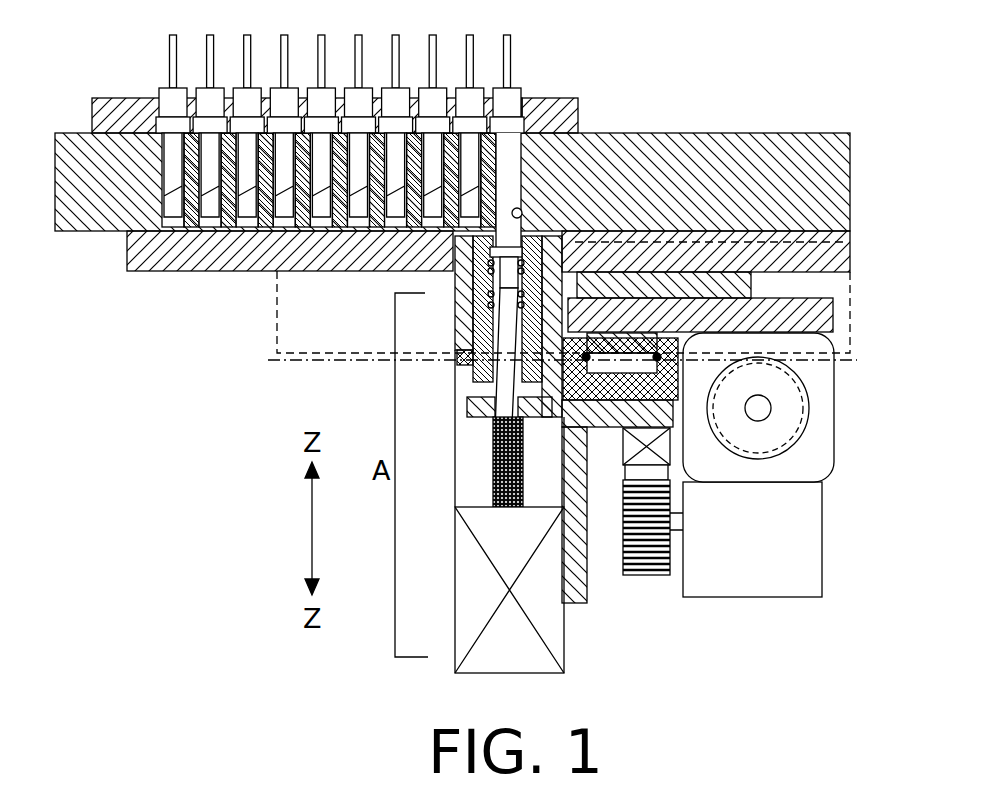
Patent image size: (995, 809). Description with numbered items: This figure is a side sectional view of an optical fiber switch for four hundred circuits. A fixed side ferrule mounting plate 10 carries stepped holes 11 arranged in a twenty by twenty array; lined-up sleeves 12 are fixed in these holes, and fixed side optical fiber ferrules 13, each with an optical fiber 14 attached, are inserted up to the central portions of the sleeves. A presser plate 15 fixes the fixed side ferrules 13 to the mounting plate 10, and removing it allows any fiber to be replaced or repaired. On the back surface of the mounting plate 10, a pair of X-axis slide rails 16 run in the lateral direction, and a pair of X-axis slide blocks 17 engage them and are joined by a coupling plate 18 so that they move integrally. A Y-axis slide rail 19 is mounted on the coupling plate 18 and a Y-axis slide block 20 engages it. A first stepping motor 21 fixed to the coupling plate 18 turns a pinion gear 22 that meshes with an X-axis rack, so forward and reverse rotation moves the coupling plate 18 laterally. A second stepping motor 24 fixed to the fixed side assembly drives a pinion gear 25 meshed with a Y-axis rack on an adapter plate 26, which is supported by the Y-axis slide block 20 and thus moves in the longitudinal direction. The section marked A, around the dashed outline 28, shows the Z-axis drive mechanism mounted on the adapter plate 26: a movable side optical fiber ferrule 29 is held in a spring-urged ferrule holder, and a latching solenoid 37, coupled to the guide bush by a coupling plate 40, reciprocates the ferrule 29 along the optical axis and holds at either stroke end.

The fixed side ferrule mounting plate 10 is at (750, 142).
The stepped holes 11 is at (523, 213).
The lined-up sleeves 12 is at (523, 157).
The fixed side optical fiber ferrules 13 is at (507, 143).
The optical fibers 14 is at (505, 42).
The presser plate 15 is at (128, 100).
The X-axis slide rails 16 is at (178, 260).
The X-axis slide blocks 17 is at (751, 295).
The coupling plate 18 is at (833, 312).
The Y-axis slide rail 19 is at (637, 343).
The Y-axis slide block 20 is at (685, 420).
The first stepping motor 21 is at (817, 465).
The pinion gear 22 is at (810, 407).
The second stepping motor 24 is at (813, 583).
The pinion gear 25 is at (647, 573).
The adapter plate 26 is at (577, 603).
The movable frame outline 28 is at (292, 362).
The movable side optical fiber ferrule 29 is at (457, 323).
The latching solenoid 37 is at (475, 592).
The coupling plate 40 is at (472, 442).